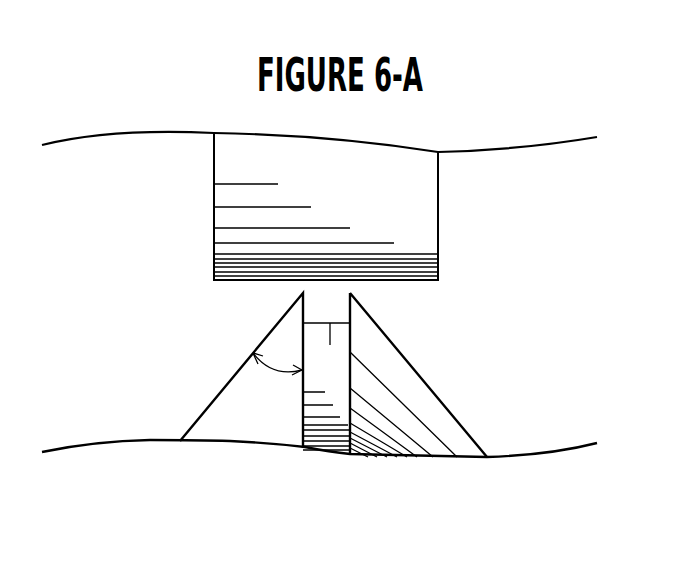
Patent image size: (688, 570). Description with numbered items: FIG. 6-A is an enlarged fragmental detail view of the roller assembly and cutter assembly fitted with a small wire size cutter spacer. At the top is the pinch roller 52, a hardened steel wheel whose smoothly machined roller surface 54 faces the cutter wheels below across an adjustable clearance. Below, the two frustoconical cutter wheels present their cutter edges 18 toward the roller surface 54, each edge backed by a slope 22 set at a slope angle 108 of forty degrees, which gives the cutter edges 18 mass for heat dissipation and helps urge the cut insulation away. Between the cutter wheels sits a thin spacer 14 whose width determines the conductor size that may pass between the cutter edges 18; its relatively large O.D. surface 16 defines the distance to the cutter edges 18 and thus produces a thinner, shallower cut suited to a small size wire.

The pinch roller 52 is at (413, 167).
The roller surface 54 is at (390, 280).
The cutter edge 18 is at (303, 293).
The O.D. surface 16 is at (330, 345).
The spacer 14 is at (318, 363).
The slope 22 is at (200, 408).
The slope angle 108 is at (268, 369).